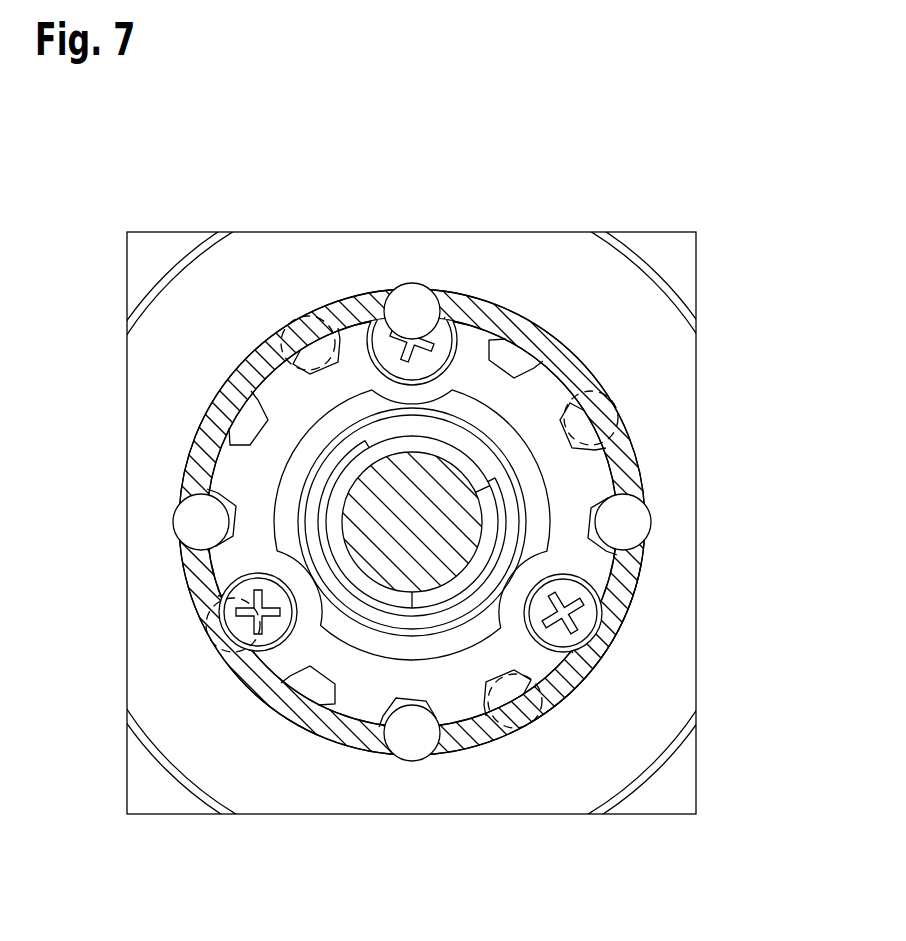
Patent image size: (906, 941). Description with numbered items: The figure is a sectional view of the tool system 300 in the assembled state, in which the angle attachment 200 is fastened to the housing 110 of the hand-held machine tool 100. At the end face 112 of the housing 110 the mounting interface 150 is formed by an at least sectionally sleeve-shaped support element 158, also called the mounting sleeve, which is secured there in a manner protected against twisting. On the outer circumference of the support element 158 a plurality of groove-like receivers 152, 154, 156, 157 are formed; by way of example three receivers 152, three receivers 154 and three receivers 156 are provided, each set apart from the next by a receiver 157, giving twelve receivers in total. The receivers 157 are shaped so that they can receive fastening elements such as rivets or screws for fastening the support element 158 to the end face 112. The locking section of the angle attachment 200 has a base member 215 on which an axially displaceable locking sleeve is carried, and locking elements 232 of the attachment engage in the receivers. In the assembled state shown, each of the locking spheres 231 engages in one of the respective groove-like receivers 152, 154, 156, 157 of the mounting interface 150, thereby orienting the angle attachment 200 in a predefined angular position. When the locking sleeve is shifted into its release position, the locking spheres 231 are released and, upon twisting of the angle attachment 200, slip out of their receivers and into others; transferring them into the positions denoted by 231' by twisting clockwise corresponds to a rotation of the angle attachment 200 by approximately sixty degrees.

The tool system 300 is at (130, 188).
The housing 110 is at (663, 255).
The end face 112 is at (450, 260).
The hand-held machine tool 100 is at (585, 292).
The support element (mounting sleeve) 158 is at (572, 481).
The angle attachment 200 is at (588, 363).
The mounting interface 150 is at (232, 350).
The groove-like receiver 154 is at (230, 420).
The base member 215 is at (610, 614).
The locking element 232 is at (388, 283).
The groove-like receiver 152 is at (515, 347).
The groove-like receiver 156 is at (316, 704).
The groove-like receiver 157 is at (457, 323).
The locking sphere 231 is at (414, 523).
The locking sphere position 231' is at (416, 523).